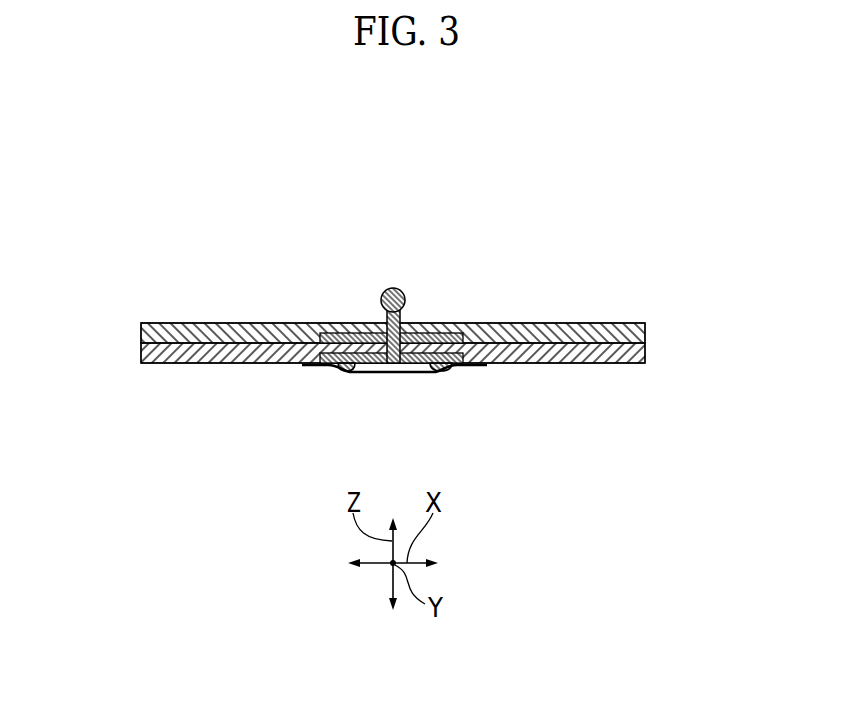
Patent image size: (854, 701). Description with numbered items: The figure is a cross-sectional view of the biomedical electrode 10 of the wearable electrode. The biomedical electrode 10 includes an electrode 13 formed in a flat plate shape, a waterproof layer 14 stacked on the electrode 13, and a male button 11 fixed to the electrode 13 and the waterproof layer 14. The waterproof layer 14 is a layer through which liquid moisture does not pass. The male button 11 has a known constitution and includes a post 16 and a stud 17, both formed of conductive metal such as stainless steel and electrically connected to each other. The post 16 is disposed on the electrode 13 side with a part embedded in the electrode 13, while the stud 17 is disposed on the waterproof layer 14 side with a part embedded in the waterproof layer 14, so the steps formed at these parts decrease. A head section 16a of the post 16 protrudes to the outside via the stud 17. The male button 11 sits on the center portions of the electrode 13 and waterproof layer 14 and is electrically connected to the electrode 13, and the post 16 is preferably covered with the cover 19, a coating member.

The biomedical electrode 10 is at (133, 238).
The male button 11 is at (424, 268).
The electrode 13 is at (636, 355).
The waterproof layer 14 is at (636, 333).
The post 16 is at (453, 358).
The head section 16a is at (388, 289).
The stud 17 is at (432, 325).
The cover 19 is at (413, 373).